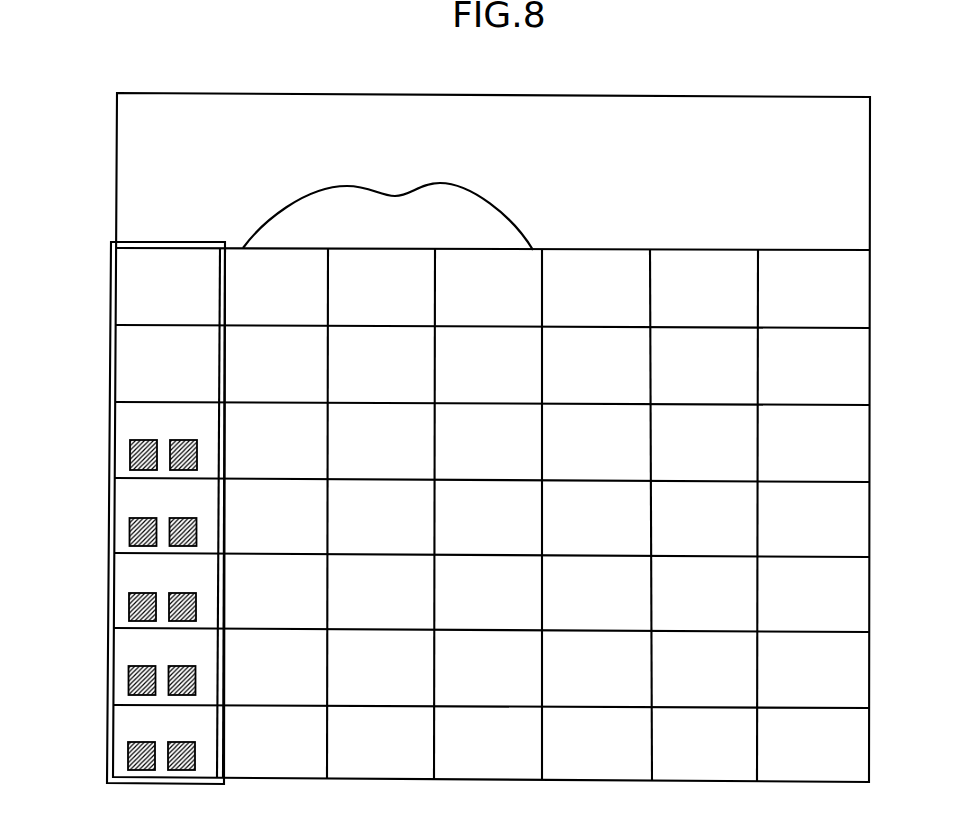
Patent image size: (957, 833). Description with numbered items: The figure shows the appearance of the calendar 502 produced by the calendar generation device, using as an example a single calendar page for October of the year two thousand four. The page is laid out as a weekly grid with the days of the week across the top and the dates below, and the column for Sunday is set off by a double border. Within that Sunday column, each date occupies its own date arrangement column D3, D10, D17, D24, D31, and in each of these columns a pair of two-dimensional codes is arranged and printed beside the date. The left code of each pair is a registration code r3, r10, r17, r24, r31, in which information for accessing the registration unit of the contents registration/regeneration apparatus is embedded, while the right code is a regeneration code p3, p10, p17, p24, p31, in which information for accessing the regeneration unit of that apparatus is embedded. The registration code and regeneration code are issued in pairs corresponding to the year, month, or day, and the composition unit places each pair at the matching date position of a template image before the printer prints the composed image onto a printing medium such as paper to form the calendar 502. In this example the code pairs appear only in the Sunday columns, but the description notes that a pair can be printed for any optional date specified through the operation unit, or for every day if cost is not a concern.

The calendar 502 is at (790, 96).
The date arrangement column for Sunday D3 is at (140, 425).
The registration code r3 is at (130, 457).
The regeneration code p3 is at (197, 455).
The date arrangement column for Sunday D10 is at (140, 502).
The registration code r10 is at (130, 532).
The regeneration code p10 is at (196, 532).
The date arrangement column for Sunday D17 is at (140, 575).
The registration code r17 is at (129, 607).
The regeneration code p17 is at (196, 607).
The date arrangement column for Sunday D24 is at (140, 648).
The registration code r24 is at (128, 681).
The regeneration code p24 is at (196, 681).
The date arrangement column for Sunday D31 is at (140, 725).
The registration code r31 is at (128, 756).
The regeneration code p31 is at (195, 756).